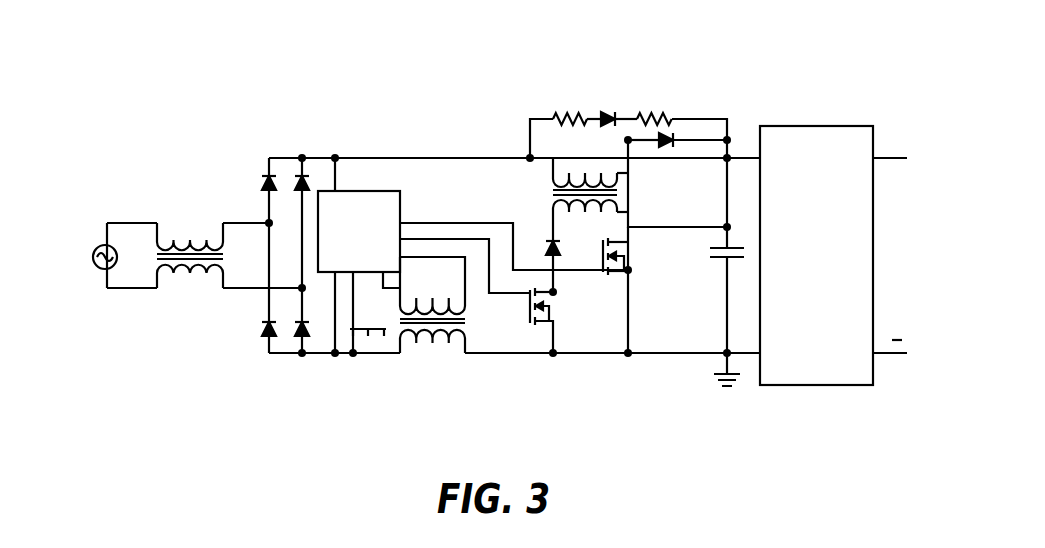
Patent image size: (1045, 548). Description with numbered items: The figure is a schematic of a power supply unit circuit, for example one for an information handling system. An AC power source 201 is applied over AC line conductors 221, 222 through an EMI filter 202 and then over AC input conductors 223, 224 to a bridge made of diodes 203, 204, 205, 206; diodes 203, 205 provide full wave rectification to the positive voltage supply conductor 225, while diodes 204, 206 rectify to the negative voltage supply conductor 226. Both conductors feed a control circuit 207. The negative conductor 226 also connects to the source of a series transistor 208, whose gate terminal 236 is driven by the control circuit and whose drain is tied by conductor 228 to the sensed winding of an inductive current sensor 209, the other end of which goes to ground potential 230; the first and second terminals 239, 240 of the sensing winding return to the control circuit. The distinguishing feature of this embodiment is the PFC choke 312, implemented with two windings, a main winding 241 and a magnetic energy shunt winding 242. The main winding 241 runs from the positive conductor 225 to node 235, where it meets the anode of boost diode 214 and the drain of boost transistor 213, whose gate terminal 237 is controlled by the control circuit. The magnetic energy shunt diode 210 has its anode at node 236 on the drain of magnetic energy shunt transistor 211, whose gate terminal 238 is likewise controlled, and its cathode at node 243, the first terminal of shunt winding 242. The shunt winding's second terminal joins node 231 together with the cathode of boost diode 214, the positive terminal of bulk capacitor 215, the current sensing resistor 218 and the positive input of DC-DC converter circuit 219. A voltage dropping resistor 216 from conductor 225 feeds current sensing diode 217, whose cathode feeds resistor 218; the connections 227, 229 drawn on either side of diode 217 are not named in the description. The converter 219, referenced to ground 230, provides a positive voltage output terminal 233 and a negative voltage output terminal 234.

The AC power source 201 is at (98, 248).
The EMI filter 202 is at (187, 240).
The diode 203 is at (262, 183).
The diode 204 is at (263, 331).
The diode 205 is at (297, 183).
The diode 206 is at (298, 331).
The control circuit 207 is at (373, 191).
The series transistor 208 is at (370, 332).
The inductive current sensor 209 is at (430, 352).
The magnetic energy shunt diode 210 is at (550, 243).
The magnetic energy shunt transistor 211 is at (528, 314).
The boost transistor 213 is at (612, 256).
The boost diode 214 is at (670, 136).
The bulk capacitor 215 is at (712, 262).
The voltage dropping resistor 216 is at (566, 119).
The current sensing diode 217 is at (612, 113).
The current sensing resistor 218 is at (655, 118).
The DC-DC converter circuit 219 is at (823, 126).
The AC line conductor 221 is at (131, 222).
The AC line conductor 222 is at (130, 290).
The AC input conductor 223 is at (232, 222).
The AC input conductor 224 is at (233, 290).
The positive voltage supply conductor 225 is at (440, 158).
The negative voltage supply conductor 226 is at (322, 357).
The diode anode connection 227 is at (595, 114).
The conductor 228 is at (384, 340).
The diode cathode connection 229 is at (617, 113).
The ground potential 230 is at (490, 355).
The node 231 is at (730, 116).
The positive voltage output terminal 233 is at (890, 158).
The negative voltage output terminal 234 is at (893, 358).
The node 235 is at (630, 166).
The gate terminal 236 is at (352, 305).
The gate terminal 237 is at (468, 223).
The gate terminal 238 is at (433, 223).
The first terminal 239 is at (407, 296).
The second terminal 240 is at (465, 267).
The main winding 241 is at (580, 176).
The magnetic energy shunt winding 242 is at (555, 242).
The node 243 is at (550, 238).
The PFC choke 312 is at (629, 206).